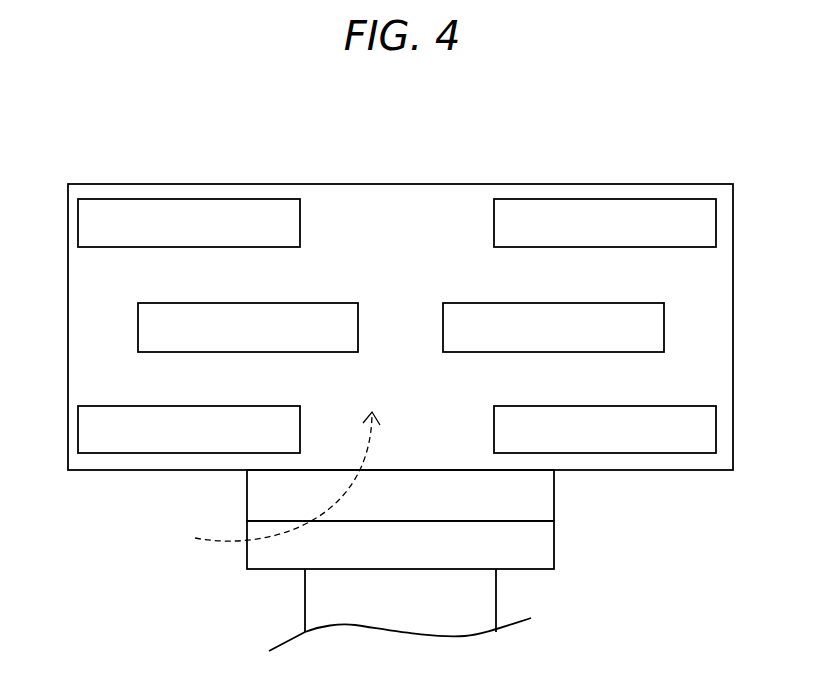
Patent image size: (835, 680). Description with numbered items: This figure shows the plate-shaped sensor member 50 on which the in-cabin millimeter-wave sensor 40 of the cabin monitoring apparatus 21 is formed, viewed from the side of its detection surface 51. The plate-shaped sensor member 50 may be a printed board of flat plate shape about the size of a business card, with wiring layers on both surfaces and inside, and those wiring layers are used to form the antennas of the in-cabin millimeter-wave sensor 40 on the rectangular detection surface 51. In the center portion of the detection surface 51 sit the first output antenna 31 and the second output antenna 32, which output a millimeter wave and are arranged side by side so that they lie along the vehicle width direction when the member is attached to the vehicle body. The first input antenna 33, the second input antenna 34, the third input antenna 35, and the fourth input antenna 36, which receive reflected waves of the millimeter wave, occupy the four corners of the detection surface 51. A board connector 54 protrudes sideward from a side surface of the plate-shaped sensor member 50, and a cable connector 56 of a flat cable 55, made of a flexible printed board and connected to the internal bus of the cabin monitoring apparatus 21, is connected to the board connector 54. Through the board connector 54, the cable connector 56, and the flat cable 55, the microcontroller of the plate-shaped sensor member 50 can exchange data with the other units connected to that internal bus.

The in-cabin millimeter-wave sensor 40 is at (366, 164).
The cabin monitoring apparatus 21 is at (404, 365).
The plate-shaped sensor member 50 is at (470, 190).
The first output antenna 31 is at (143, 328).
The second output antenna 32 is at (655, 332).
The first input antenna 33 is at (83, 229).
The second input antenna 34 is at (83, 433).
The third input antenna 35 is at (718, 230).
The fourth input antenna 36 is at (718, 437).
The detection surface 51 is at (273, 476).
The board connector 54 is at (553, 503).
The flat cable 55 is at (487, 593).
The cable connector 56 is at (542, 551).